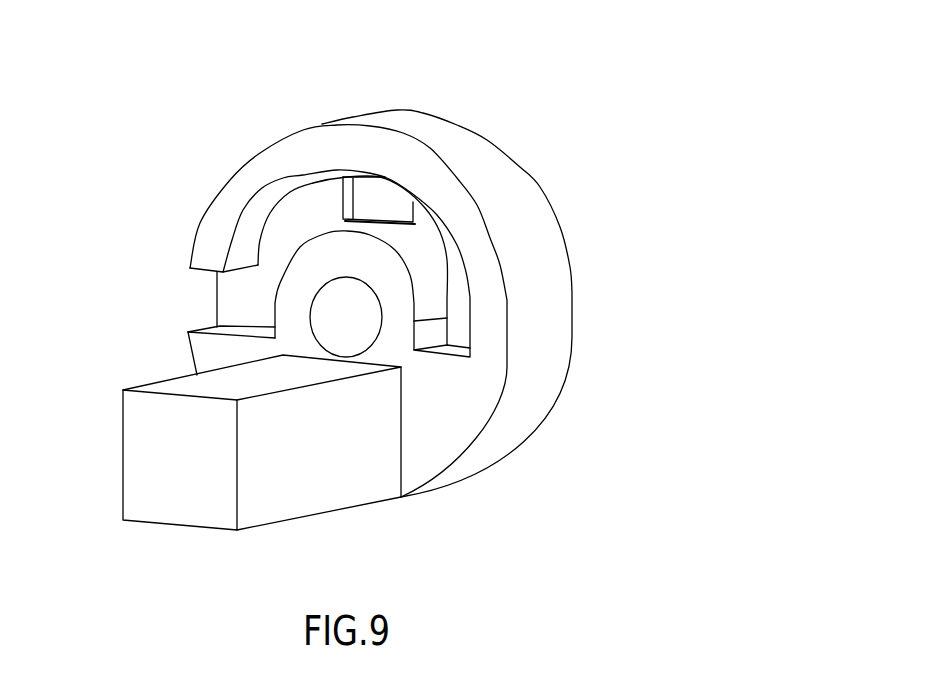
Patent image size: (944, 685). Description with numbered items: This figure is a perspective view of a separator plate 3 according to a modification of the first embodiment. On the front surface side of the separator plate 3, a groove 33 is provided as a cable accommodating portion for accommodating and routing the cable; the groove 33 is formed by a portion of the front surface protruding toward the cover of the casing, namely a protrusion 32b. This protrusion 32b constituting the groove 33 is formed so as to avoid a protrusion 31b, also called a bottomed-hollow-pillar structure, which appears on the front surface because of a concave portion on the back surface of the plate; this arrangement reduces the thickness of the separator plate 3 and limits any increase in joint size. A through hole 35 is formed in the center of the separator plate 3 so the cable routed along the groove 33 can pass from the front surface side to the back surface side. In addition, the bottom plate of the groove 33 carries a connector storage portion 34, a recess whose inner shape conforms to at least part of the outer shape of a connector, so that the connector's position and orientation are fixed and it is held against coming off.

The separator plate 3 is at (524, 166).
The protrusion 31b is at (197, 497).
The protrusion 32b is at (283, 158).
The groove 33 is at (283, 242).
The connector storage portion 34 is at (385, 203).
The through hole 35 is at (355, 327).